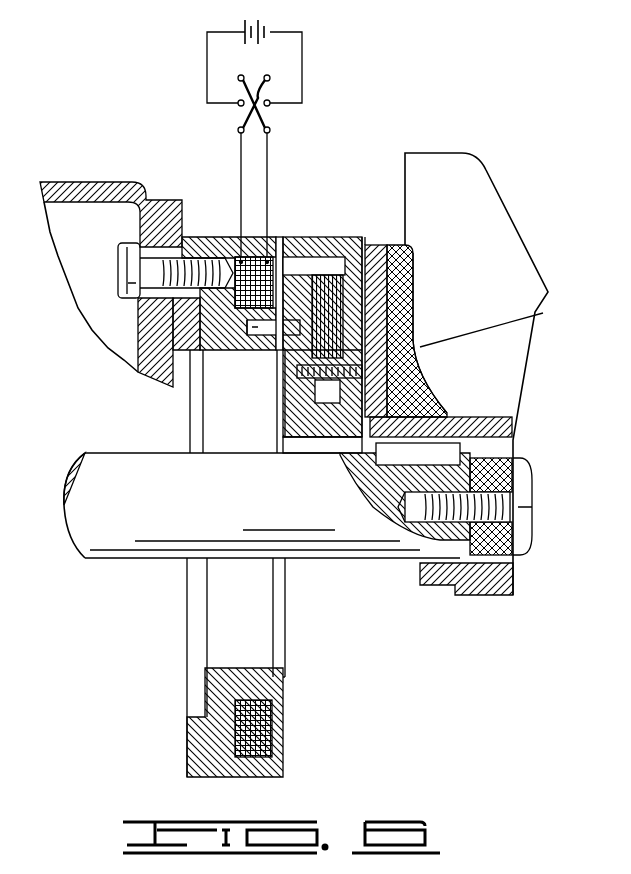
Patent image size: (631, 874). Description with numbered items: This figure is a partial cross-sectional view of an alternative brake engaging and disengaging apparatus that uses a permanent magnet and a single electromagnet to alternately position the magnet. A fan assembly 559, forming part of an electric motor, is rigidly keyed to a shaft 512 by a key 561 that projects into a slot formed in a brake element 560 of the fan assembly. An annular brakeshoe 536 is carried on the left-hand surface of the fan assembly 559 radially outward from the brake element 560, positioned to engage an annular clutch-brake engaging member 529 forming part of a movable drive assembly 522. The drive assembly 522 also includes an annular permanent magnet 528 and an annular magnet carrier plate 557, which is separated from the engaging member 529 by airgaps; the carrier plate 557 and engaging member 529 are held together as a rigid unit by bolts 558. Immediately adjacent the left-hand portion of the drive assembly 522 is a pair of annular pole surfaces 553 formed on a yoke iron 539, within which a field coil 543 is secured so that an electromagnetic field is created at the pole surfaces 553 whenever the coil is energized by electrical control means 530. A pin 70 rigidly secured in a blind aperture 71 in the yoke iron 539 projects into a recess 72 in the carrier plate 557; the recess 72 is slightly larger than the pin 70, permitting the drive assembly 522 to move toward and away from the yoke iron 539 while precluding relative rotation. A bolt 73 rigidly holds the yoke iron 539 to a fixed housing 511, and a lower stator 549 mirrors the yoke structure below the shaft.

The fixed housing 511 is at (80, 181).
The electrical control means 530 is at (273, 117).
The bolt 73 is at (150, 270).
The yoke iron 539 is at (200, 318).
The field coil 543 is at (243, 257).
The annular pole surfaces 553 is at (280, 237).
The annular permanent magnet 528 is at (330, 257).
The movable drive assembly 522 is at (360, 248).
The annular clutch-brake engaging member 529 is at (398, 268).
The annular brakeshoe 536 is at (395, 300).
The recess 72 is at (335, 333).
The fan assembly 559 is at (530, 357).
The brake element 560 is at (490, 432).
The key 561 is at (462, 452).
The shaft 512 is at (303, 525).
The lower stator 549 is at (215, 743).
The annular magnet carrier plate 557 is at (305, 421).
The bolts 558 is at (305, 388).
The pin 70 is at (268, 342).
The blind aperture 71 is at (237, 343).